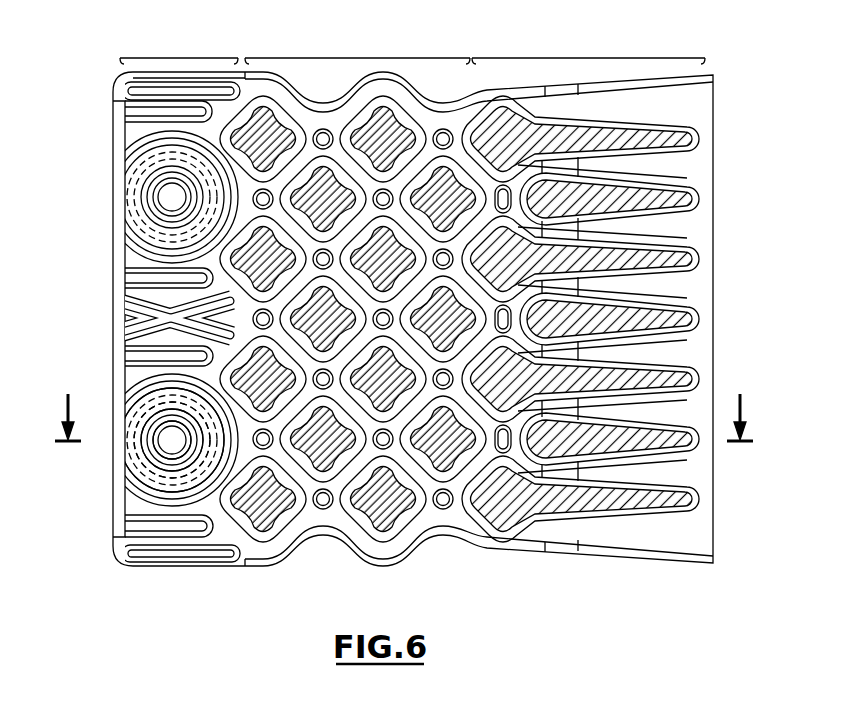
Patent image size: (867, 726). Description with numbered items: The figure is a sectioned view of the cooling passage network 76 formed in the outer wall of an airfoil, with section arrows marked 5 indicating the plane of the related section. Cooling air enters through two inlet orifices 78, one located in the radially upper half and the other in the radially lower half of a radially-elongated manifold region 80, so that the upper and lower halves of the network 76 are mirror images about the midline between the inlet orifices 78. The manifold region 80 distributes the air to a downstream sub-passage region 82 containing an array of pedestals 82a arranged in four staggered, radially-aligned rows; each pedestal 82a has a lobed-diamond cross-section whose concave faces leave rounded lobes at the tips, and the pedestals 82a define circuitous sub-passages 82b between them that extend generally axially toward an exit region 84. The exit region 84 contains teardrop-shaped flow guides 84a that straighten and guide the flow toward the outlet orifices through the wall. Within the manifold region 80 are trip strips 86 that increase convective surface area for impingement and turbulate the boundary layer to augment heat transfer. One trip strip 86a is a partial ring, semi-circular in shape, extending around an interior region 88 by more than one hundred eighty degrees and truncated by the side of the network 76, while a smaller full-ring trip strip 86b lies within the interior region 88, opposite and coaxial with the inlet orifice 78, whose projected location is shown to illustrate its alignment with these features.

The cooling passage network 76 is at (681, 585).
The inlet orifices 78 is at (147, 182).
The manifold region 80 is at (172, 305).
The sub-passage region 82 is at (365, 309).
The pedestals 82a is at (390, 510).
The sub-passages 82b is at (353, 470).
The exit region 84 is at (583, 301).
The flow guides 84a is at (520, 500).
The trip strips 86 is at (162, 456).
The partial ring trip strip 86a is at (152, 491).
The full ring trip strip 86b is at (170, 420).
The interior region 88 is at (188, 484).
The section line 5 is at (403, 417).